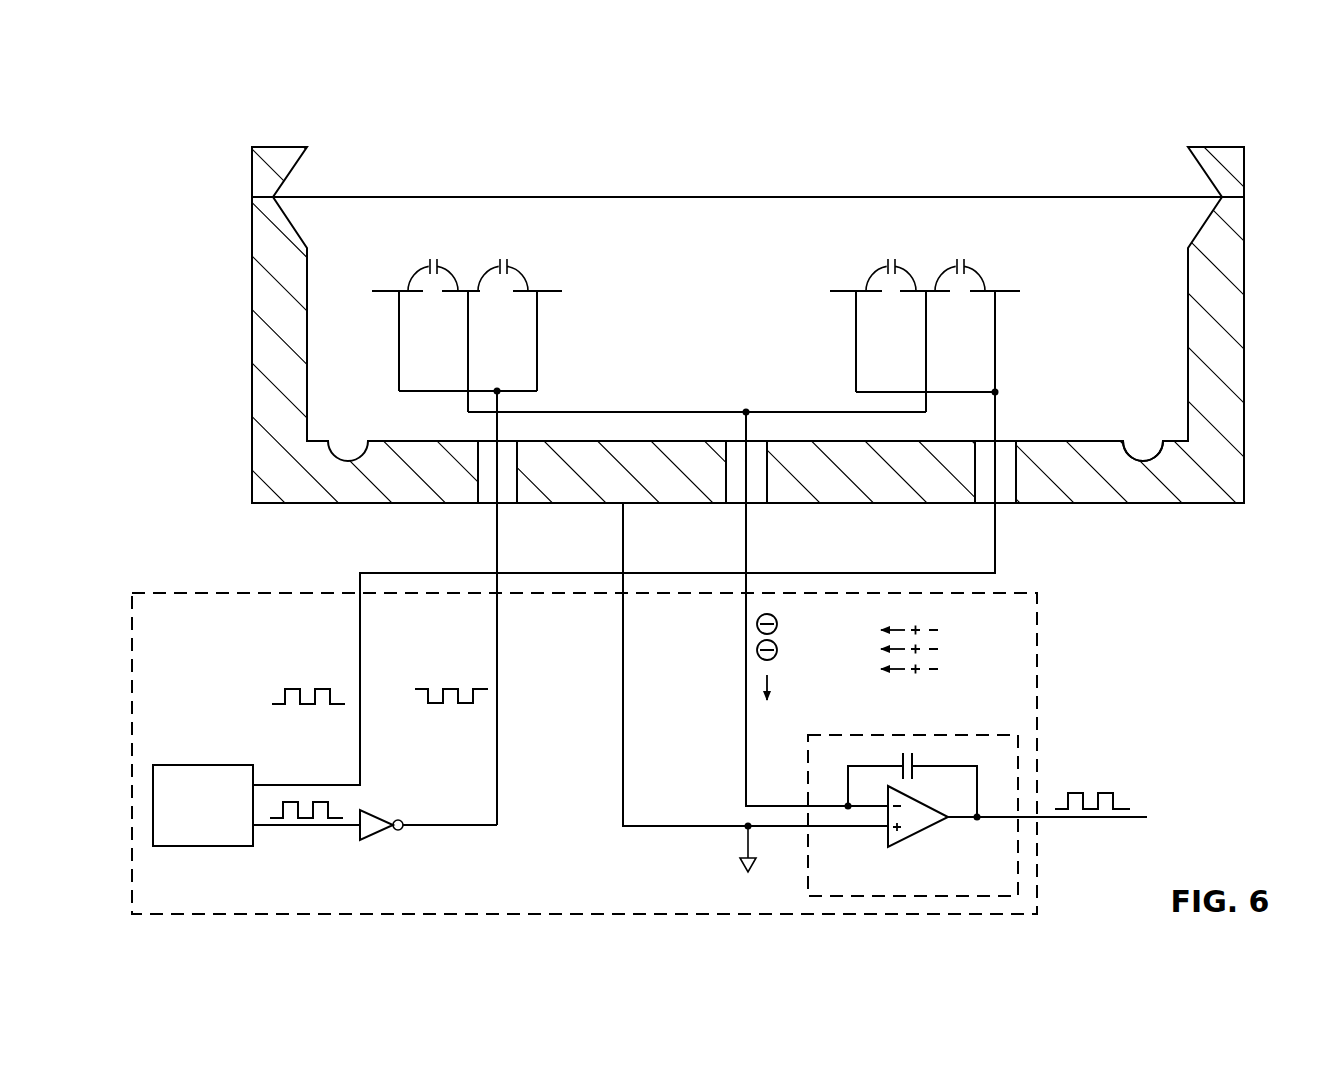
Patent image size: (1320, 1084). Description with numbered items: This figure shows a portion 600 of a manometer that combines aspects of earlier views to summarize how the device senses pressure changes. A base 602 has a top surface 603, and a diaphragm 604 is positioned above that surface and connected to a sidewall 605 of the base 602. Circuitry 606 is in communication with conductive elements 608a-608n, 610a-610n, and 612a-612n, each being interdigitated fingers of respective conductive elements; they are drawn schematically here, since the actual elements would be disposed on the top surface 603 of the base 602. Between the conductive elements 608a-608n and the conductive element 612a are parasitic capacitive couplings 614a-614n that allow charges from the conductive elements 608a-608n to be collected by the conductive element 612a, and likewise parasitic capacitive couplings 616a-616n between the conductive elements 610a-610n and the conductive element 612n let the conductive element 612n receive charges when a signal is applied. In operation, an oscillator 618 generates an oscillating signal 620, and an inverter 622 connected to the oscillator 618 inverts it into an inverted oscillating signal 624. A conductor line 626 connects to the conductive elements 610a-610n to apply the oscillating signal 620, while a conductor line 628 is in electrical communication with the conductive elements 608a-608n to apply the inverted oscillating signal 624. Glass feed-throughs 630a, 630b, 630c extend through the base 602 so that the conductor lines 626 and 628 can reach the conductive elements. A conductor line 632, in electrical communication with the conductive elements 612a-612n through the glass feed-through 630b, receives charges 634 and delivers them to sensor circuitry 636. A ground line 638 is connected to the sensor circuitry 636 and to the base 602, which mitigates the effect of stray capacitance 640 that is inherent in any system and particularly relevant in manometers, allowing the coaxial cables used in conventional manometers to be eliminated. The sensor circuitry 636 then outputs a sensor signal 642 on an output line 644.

The portion of a manometer 600 is at (937, 158).
The base 602 is at (1155, 504).
The top surface 603 is at (1099, 440).
The diaphragm 604 is at (662, 193).
The sidewall 605 is at (252, 274).
The circuitry 606 is at (205, 591).
The conductive element 608a is at (385, 294).
The conductive element 608n is at (549, 294).
The conductive element 610a is at (845, 294).
The conductive element 610n is at (1010, 294).
The conductive element 612a is at (450, 294).
The conductive element 612n is at (910, 294).
The parasitic capacitive coupling 614a is at (420, 270).
The parasitic capacitive coupling 614n is at (518, 270).
The parasitic capacitive coupling 616a is at (876, 270).
The parasitic capacitive coupling 616n is at (976, 270).
The oscillator 618 is at (203, 848).
The oscillating signal 620 is at (305, 708).
The inverter 622 is at (382, 836).
The inverted oscillating signal 624 is at (435, 708).
The conductor line 626 is at (360, 645).
The conductor line 628 is at (498, 775).
The glass feed-through 630a is at (487, 505).
The glass feed-through 630b is at (758, 505).
The glass feed-through 630c is at (1008, 505).
The conductor line 632 is at (746, 713).
The charges 634 is at (790, 648).
The sensor circuitry 636 is at (958, 735).
The ground line 638 is at (700, 828).
The stray capacitance 640 is at (948, 643).
The sensor signal 642 is at (1108, 792).
The output line 644 is at (1098, 820).